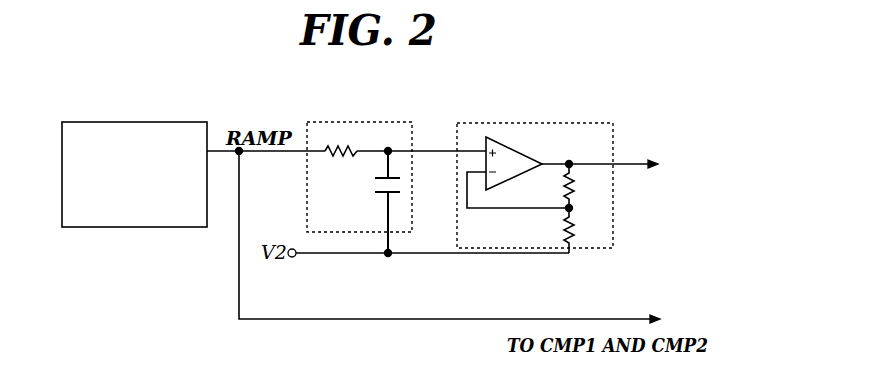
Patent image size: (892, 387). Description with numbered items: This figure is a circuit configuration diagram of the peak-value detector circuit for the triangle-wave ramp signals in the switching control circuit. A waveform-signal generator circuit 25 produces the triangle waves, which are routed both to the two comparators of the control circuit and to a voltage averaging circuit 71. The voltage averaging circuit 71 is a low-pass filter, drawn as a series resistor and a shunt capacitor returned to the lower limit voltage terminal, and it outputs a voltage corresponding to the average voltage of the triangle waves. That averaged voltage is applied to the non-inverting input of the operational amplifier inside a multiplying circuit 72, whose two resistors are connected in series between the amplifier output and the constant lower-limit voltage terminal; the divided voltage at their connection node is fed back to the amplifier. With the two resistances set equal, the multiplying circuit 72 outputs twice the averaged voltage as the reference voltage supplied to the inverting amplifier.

The waveform-signal generator circuit 25 is at (157, 122).
The voltage averaging circuit 71 is at (353, 122).
The multiplying circuit 72 is at (530, 123).